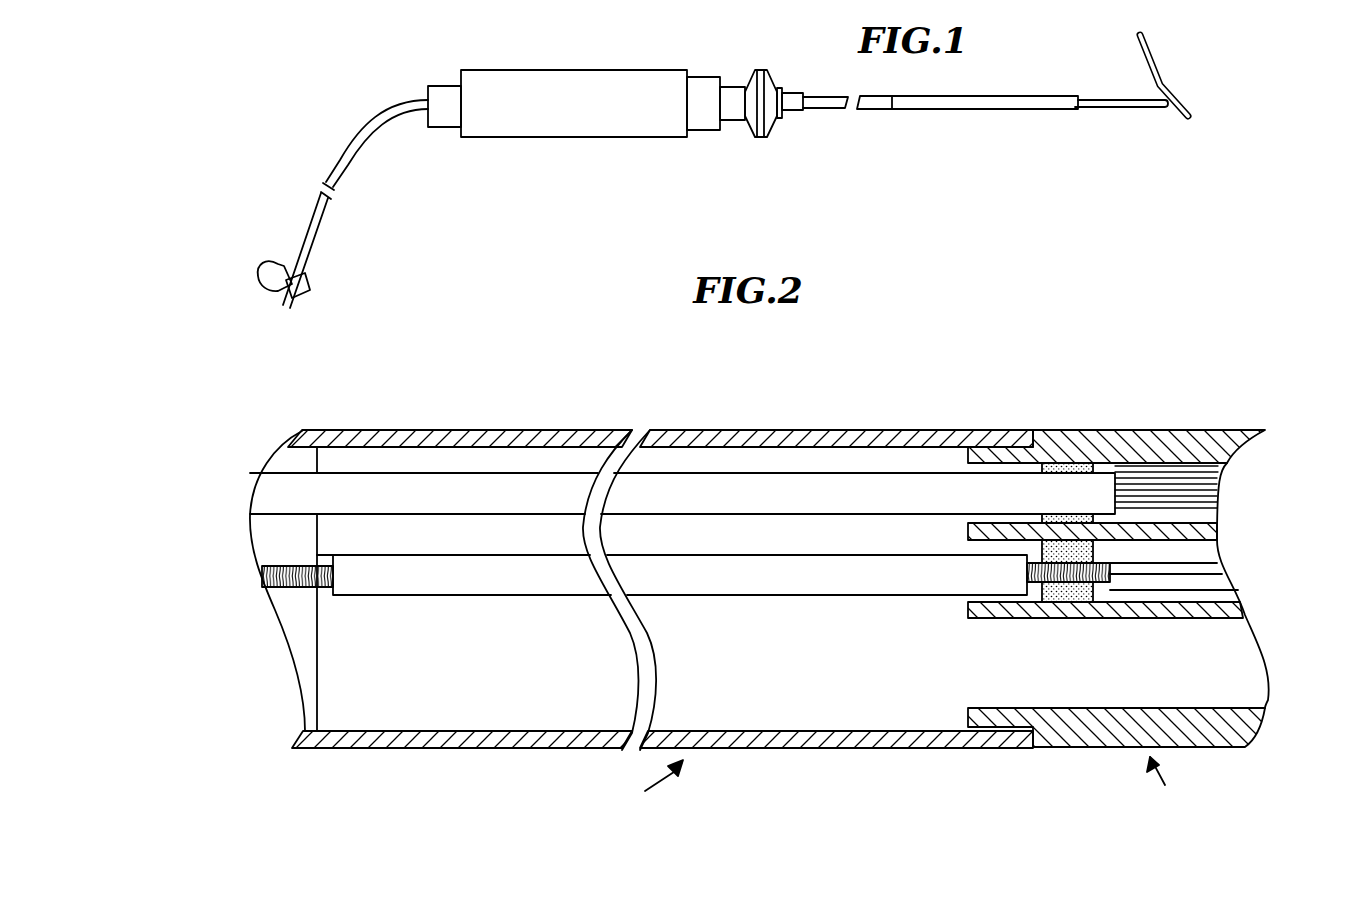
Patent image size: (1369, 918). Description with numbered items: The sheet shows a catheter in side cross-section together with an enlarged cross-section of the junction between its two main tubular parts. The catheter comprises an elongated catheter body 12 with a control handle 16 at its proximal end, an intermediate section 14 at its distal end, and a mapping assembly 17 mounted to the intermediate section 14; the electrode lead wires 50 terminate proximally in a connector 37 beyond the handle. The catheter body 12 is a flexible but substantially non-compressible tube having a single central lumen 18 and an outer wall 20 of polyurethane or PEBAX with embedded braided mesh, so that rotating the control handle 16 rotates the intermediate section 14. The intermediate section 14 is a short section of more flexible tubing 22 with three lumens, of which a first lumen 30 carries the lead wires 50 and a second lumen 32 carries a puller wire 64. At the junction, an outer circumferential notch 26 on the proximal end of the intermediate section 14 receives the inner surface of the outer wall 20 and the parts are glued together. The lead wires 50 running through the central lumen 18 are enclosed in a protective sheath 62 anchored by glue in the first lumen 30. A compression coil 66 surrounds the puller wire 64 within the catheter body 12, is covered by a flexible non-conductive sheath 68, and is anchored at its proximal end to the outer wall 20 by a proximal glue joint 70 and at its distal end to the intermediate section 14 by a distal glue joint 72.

In FIG. 1, the catheter body 12 is at (823, 108).
In FIG. 2, the catheter body 12 is at (645, 791).
In FIG. 1, the intermediate section 14 is at (937, 108).
In FIG. 2, the intermediate section 14 is at (1165, 785).
In FIG. 1, the control handle 16 is at (585, 130).
In FIG. 1, the mapping assembly 17 is at (1117, 106).
In FIG. 2, the central lumen 18 is at (868, 606).
In FIG. 2, the outer wall 20 is at (848, 431).
In FIG. 2, the tubing 22 is at (1134, 428).
In FIG. 2, the outer circumferential notch 26 is at (1016, 432).
In FIG. 2, the first lumen 30 is at (1213, 467).
In FIG. 2, the second lumen 32 is at (1220, 590).
In FIG. 1, the connector 37 is at (277, 292).
In FIG. 2, the electrode lead wires 50 is at (1160, 515).
In FIG. 2, the protective sheath 62 is at (760, 497).
In FIG. 2, the puller wire 64 is at (1176, 573).
In FIG. 2, the compression coil 66 is at (280, 575).
In FIG. 2, the non-conductive sheath 68 is at (790, 575).
In FIG. 2, the proximal glue joint 70 is at (320, 732).
In FIG. 2, the distal glue joint 72 is at (1052, 594).